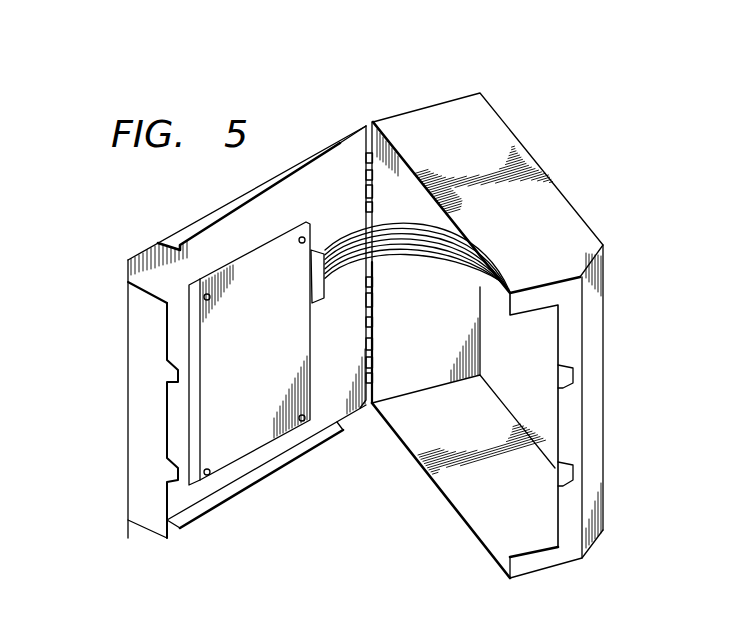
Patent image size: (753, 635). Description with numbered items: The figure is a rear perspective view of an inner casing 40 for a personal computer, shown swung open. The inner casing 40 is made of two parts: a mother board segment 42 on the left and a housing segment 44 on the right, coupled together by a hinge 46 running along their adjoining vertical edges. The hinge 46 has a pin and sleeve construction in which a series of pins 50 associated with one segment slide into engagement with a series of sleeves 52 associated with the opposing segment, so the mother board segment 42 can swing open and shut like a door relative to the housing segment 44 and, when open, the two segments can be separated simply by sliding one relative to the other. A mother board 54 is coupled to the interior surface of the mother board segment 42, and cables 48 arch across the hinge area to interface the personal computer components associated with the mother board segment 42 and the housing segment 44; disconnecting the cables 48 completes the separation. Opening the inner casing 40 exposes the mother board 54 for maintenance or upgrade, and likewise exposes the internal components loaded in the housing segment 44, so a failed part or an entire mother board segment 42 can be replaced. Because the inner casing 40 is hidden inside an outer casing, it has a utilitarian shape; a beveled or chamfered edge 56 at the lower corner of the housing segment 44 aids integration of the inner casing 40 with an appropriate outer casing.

The inner casing 40 is at (464, 58).
The mother board segment 42 is at (100, 422).
The housing segment 44 is at (621, 418).
The hinge 46 is at (376, 360).
The cables 48 is at (343, 237).
The pins 50 is at (377, 320).
The sleeves 52 is at (375, 328).
The mother board 54 is at (240, 365).
The beveled or chamfered edge 56 is at (596, 537).